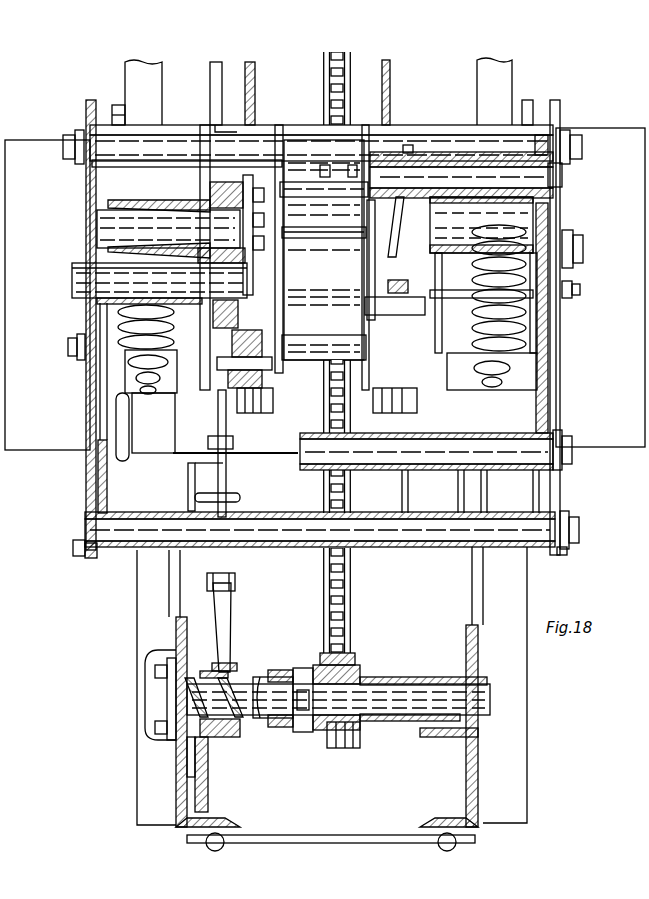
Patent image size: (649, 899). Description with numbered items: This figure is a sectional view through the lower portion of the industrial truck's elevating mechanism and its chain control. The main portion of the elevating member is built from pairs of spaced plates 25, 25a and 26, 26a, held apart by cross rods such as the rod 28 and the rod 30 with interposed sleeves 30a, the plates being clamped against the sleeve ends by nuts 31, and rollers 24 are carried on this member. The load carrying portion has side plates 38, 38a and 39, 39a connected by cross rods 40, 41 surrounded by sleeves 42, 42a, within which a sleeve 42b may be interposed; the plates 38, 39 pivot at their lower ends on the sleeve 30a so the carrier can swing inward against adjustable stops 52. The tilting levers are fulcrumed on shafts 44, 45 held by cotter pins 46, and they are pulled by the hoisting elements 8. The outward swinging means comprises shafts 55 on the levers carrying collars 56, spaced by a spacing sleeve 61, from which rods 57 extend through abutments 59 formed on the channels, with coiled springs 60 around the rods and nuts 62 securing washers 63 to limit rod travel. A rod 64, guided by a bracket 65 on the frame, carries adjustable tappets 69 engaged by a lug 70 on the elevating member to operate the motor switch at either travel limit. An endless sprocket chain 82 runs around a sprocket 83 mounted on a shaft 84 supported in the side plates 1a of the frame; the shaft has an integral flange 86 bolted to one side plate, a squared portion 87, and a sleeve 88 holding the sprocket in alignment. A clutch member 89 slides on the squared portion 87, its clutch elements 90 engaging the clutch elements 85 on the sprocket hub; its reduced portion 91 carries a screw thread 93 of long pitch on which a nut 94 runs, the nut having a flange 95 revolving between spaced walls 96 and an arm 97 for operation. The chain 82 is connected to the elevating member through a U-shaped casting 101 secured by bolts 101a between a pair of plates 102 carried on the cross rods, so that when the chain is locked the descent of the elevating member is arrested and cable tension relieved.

The side plate 1a is at (483, 642).
The hoisting elements 8 is at (381, 96).
The roller 24 is at (144, 455).
The plate 25 is at (400, 152).
The plate 25a is at (549, 376).
The plate 26 is at (202, 126).
The plate 26a is at (86, 484).
The rod 28 is at (562, 170).
The rod 30 is at (578, 536).
The sleeve 30a is at (396, 548).
The nut 31 is at (570, 515).
The side plate 38 is at (556, 551).
The side plate 38a is at (405, 472).
The side plate 39 is at (92, 556).
The side plate 39a is at (228, 400).
The cross rod 40 is at (553, 195).
The cross rod 41 is at (300, 458).
The sleeve 42 is at (383, 150).
The sleeve 42a is at (425, 152).
The sleeve 42b is at (396, 150).
The shaft 44 is at (581, 293).
The shaft 45 is at (72, 276).
The cotter pin 46 is at (85, 258).
The adjustable stop 52 is at (583, 240).
The shaft 55 is at (97, 215).
The collar 56 is at (520, 222).
The rod 57 is at (478, 322).
The abutment 59 is at (460, 375).
The spring 60 is at (478, 337).
The spacing sleeve 61 is at (182, 201).
The nut 62 is at (500, 386).
The washer 63 is at (487, 378).
The rod 64 is at (227, 476).
The bracket 65 is at (240, 499).
The tappet 69 is at (233, 442).
The lug 70 is at (230, 126).
The sprocket chain 82 is at (323, 561).
The sprocket 83 is at (355, 655).
The shaft 84 is at (380, 716).
The clutch element 85 is at (305, 667).
The flange 86 is at (160, 692).
The squared portion 87 is at (280, 718).
The sleeve 88 is at (395, 677).
The clutch member 89 is at (268, 718).
The clutch element 90 is at (260, 665).
The reduced portion 91 is at (170, 713).
The screw thread 93 is at (258, 675).
The nut 94 is at (208, 670).
The flange 95 is at (210, 757).
The spaced walls 96 is at (212, 773).
The arm 97 is at (230, 628).
The U-shaped casting 101 is at (324, 250).
The bolt 101a is at (290, 190).
The plate 102 is at (290, 239).